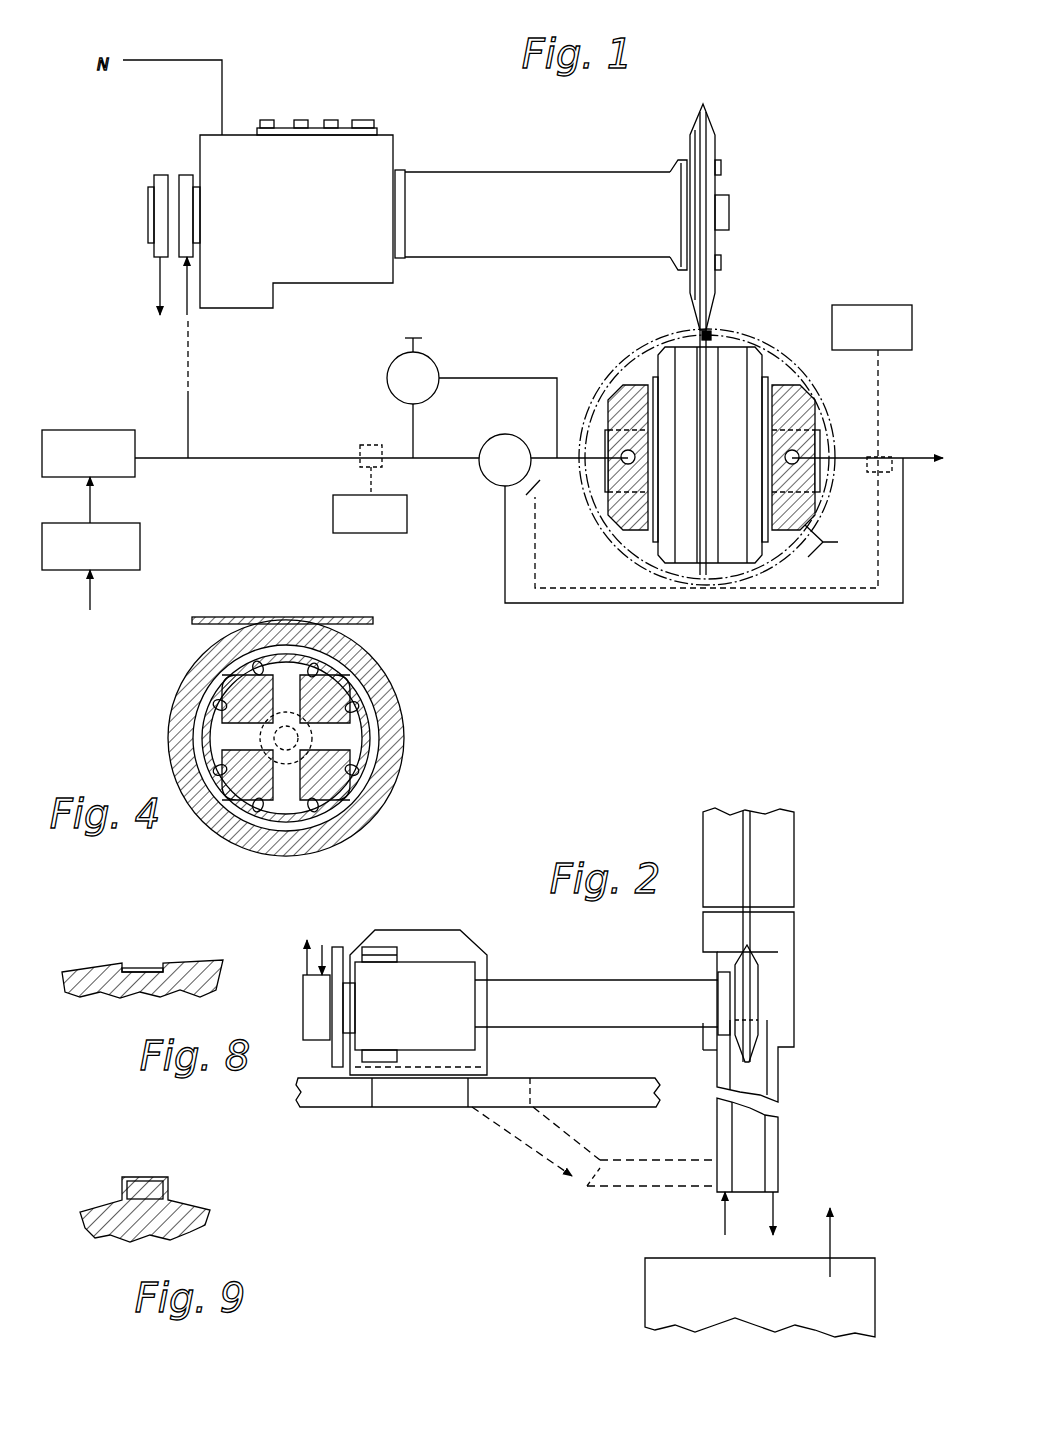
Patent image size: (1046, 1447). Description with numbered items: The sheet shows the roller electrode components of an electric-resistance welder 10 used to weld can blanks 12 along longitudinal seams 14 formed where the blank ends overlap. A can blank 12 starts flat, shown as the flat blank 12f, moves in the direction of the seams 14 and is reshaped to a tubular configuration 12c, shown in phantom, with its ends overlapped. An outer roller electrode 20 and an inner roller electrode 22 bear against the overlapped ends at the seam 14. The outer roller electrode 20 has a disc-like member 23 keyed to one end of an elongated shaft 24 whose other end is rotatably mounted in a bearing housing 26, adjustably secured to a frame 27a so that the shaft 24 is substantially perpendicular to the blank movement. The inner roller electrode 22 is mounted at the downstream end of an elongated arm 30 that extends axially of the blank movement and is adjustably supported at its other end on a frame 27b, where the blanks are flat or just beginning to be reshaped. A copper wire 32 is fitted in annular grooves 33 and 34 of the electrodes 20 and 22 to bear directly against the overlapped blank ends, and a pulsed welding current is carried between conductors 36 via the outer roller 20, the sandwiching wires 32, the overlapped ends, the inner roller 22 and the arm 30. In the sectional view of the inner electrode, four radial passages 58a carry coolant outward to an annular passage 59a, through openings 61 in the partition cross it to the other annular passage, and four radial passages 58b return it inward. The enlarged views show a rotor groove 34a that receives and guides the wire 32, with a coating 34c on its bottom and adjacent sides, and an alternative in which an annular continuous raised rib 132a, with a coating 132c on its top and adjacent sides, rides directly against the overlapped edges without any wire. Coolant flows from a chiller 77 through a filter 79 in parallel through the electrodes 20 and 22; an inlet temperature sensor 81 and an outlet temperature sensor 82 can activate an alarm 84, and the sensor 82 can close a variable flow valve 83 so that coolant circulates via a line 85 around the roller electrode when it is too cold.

In FIG. 1, the electric-resistance welder 10 is at (748, 170).
In FIG. 2, the electric-resistance welder 10 is at (675, 830).
In FIG. 2, the can blank 12 is at (795, 863).
In FIG. 1, the tubular configuration of can blank 12c is at (750, 322).
In FIG. 2, the tubular configuration of can blank 12c is at (796, 982).
In FIG. 2, the flat can blank 12f is at (852, 1258).
In FIG. 2, the longitudinal seam 14 is at (750, 832).
In FIG. 1, the outer roller electrode 20 is at (716, 120).
In FIG. 2, the outer roller electrode 20 is at (762, 1008).
In FIG. 1, the inner roller electrode 22 is at (645, 368).
In FIG. 1, the disc-like member 23 is at (690, 126).
In FIG. 1, the elongated shaft 24 is at (506, 172).
In FIG. 2, the elongated shaft 24 is at (630, 980).
In FIG. 1, the bearing housing 26 is at (386, 143).
In FIG. 2, the bearing housing 26 is at (456, 962).
In FIG. 2, the frame 27a is at (344, 1108).
In FIG. 2, the frame 27b is at (655, 1187).
In FIG. 1, the elongated arm 30 is at (622, 385).
In FIG. 2, the elongated arm 30 is at (780, 1138).
In FIG. 4, the copper wire 32 is at (372, 623).
In FIG. 1, the annular groove 33 is at (705, 103).
In FIG. 4, the annular groove 34 is at (172, 708).
In FIG. 8, the rotor groove 34a is at (135, 963).
In FIG. 8, the coating 34c is at (150, 963).
In FIG. 1, the conductors 36 is at (195, 57).
In FIG. 4, the radial passages 58a is at (285, 677).
In FIG. 4, the radial passages 58b is at (392, 672).
In FIG. 4, the annular passage 59a is at (340, 785).
In FIG. 4, the through openings 61 is at (220, 700).
In FIG. 1, the chiller 77 is at (140, 532).
In FIG. 1, the filter 79 is at (100, 428).
In FIG. 1, the inlet temperature sensor 81 is at (373, 445).
In FIG. 1, the outlet temperature sensor 82 is at (890, 456).
In FIG. 1, the variable flow valve 83 is at (490, 487).
In FIG. 1, the alarm 84 is at (888, 305).
In FIG. 1, the line 85 is at (748, 604).
In FIG. 9, the annular continuous raised rib 132a is at (140, 1178).
In FIG. 9, the coating 132c is at (163, 1181).